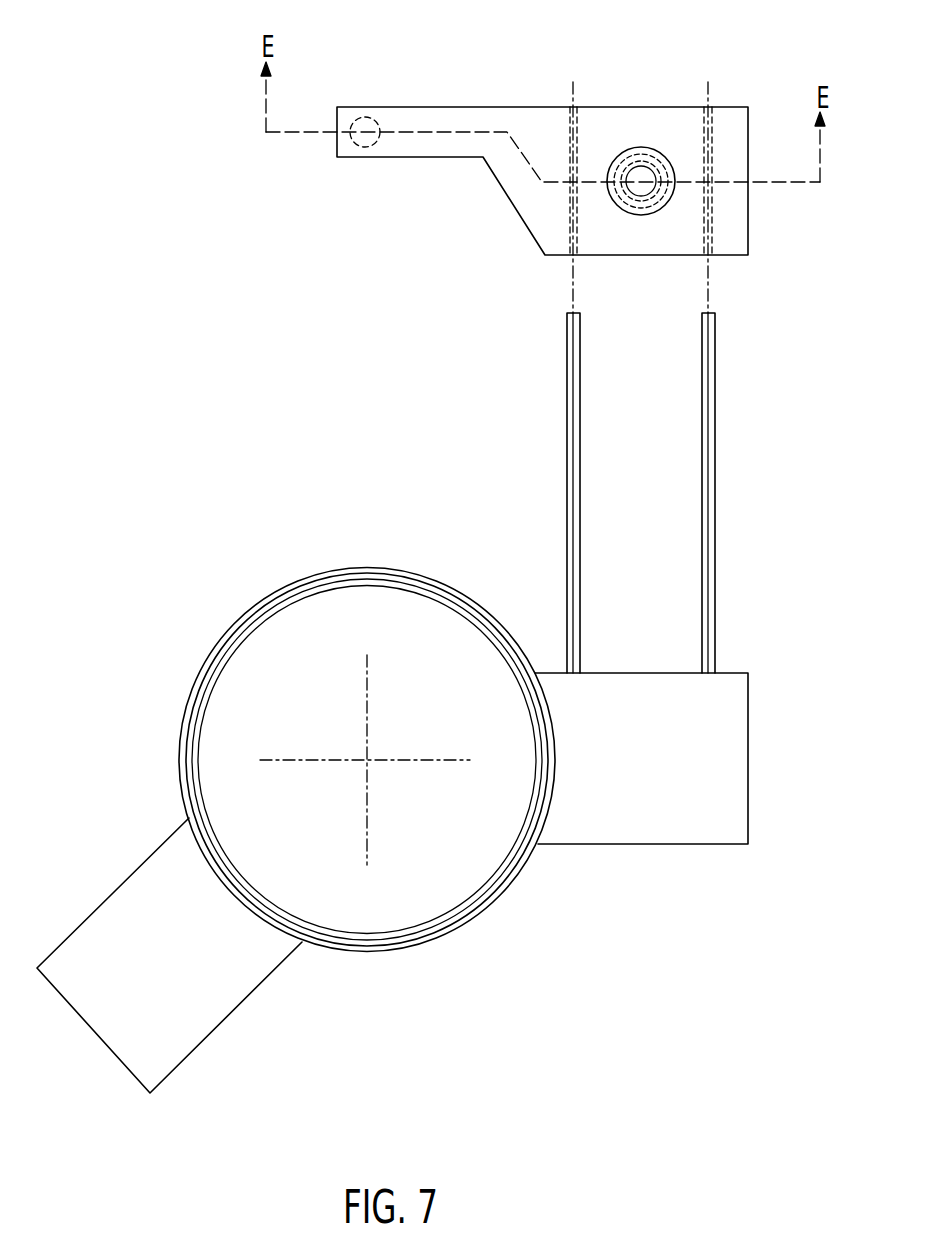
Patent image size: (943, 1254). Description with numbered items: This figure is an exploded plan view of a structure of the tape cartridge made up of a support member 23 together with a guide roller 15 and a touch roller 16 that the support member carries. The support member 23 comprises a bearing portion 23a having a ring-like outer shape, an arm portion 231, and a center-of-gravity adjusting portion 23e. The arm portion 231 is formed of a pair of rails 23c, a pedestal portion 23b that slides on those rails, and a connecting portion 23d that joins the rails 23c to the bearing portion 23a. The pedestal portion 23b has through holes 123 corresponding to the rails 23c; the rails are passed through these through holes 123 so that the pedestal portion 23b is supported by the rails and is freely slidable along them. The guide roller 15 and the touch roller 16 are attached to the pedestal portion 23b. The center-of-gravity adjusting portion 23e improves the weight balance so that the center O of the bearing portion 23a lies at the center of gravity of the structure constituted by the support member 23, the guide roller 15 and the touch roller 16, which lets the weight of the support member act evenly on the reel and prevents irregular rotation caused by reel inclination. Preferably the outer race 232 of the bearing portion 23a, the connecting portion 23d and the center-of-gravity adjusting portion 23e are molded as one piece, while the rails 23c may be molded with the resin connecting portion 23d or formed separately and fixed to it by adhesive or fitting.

The guide roller 15 is at (640, 147).
The touch roller 16 is at (365, 117).
The through holes 123 is at (698, 128).
The support member 23 is at (308, 418).
The arm portion 231 is at (383, 387).
The bearing portion 23a is at (387, 583).
The pedestal portion 23b is at (528, 203).
The rails 23c is at (567, 440).
The connecting portion 23d is at (558, 692).
The center-of-gravity adjusting portion 23e is at (198, 890).
The outer race 232 is at (517, 882).
The center O is at (367, 762).